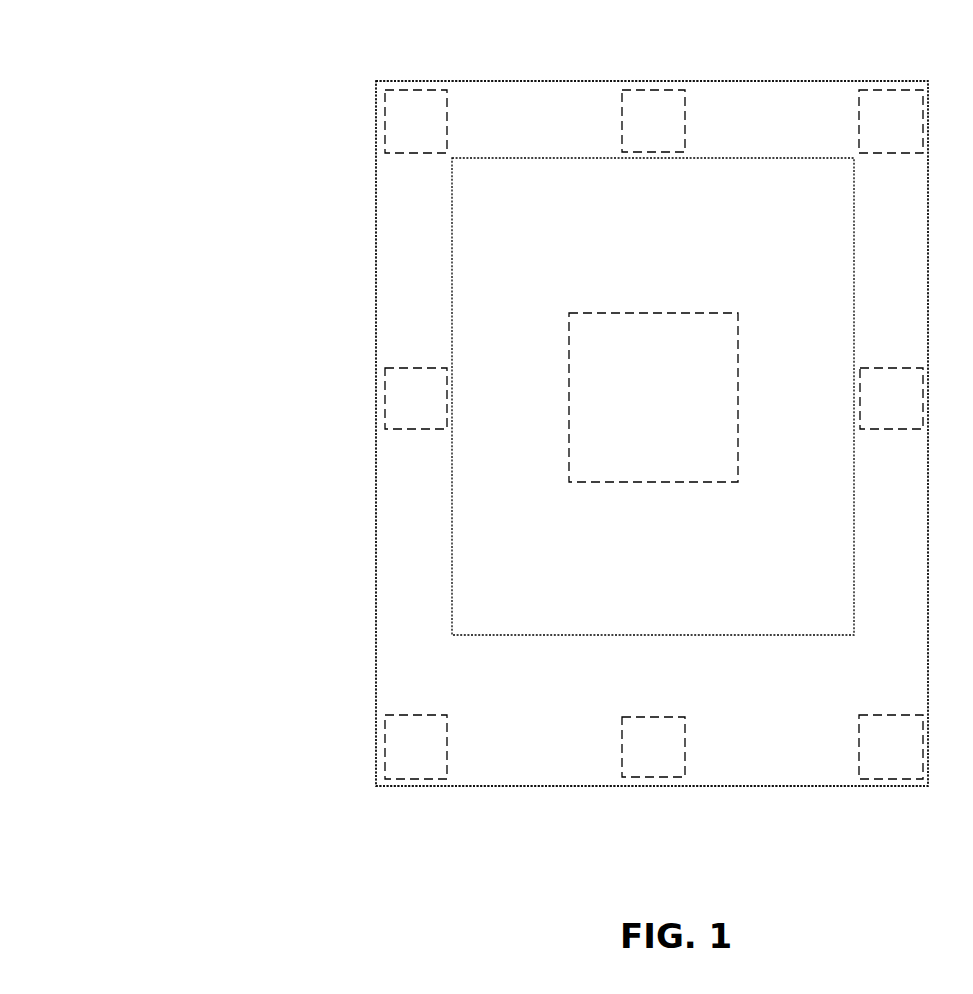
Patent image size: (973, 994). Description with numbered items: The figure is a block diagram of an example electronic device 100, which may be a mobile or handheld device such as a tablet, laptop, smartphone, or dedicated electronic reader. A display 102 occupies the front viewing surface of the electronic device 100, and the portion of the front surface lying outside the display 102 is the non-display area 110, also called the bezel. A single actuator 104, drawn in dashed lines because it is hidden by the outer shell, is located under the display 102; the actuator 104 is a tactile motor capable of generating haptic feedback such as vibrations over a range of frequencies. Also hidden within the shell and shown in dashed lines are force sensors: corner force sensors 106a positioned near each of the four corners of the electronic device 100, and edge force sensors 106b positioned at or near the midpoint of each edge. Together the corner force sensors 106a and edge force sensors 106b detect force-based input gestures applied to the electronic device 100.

The electronic device 100 is at (304, 74).
The display 102 is at (632, 626).
The actuator 104 is at (634, 406).
The corner force sensor 106a is at (399, 131).
The edge force sensor 106b is at (636, 130).
The non-display area 110 is at (590, 673).